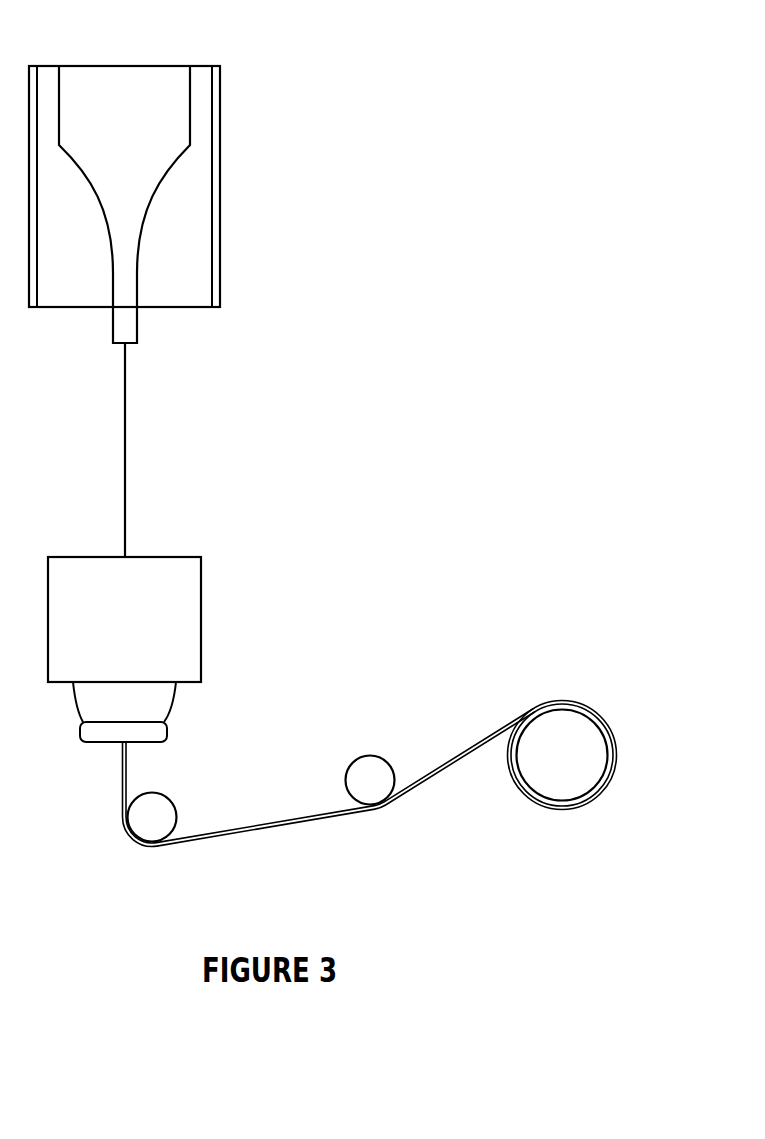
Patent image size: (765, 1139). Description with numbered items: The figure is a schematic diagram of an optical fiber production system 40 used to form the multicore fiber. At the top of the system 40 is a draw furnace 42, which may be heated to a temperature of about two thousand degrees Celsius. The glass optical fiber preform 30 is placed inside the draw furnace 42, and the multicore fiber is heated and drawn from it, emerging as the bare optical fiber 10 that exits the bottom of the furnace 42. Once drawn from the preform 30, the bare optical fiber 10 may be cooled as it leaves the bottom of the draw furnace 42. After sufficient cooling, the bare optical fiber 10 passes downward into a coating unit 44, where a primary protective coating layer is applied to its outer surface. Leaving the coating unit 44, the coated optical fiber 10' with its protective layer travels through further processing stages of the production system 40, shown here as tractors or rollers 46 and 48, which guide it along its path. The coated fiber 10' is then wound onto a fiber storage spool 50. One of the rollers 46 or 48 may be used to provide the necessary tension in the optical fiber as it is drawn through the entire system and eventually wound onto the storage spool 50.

The optical fiber production system 40 is at (208, 180).
The draw furnace 42 is at (221, 101).
The glass optical fiber preform 30 is at (136, 122).
The bare optical fiber 10 is at (164, 450).
The coating unit 44 is at (202, 598).
The coated optical fiber 10' is at (333, 774).
The roller 46 is at (155, 808).
The roller 48 is at (368, 767).
The fiber storage spool 50 is at (585, 743).